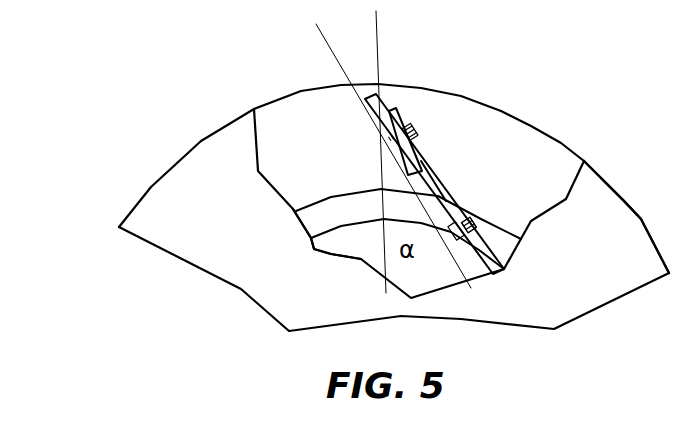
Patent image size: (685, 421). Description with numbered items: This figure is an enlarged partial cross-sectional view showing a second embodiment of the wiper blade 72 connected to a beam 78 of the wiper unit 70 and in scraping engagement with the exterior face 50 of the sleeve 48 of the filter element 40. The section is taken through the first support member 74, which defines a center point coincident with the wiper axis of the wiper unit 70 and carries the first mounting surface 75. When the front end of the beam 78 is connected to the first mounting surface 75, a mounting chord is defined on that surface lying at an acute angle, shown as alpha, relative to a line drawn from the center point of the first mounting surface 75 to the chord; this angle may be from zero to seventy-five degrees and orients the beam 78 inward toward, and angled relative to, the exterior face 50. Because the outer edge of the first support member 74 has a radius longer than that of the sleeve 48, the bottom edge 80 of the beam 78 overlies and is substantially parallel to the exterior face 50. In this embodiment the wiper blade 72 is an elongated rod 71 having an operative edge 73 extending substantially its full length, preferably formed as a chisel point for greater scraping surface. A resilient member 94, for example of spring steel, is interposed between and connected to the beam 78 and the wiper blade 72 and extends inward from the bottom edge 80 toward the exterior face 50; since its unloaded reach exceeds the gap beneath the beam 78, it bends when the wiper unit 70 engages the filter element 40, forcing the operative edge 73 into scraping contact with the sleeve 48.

The filter element 40 is at (312, 235).
The sleeve 48 is at (333, 222).
The exterior face 50 is at (333, 222).
The wiper unit 70 is at (617, 193).
The elongated rod 71 is at (453, 334).
The wiper blade 72 is at (453, 232).
The operative edge 73 is at (459, 233).
The first support member 74 is at (632, 228).
The first mounting surface 75 is at (598, 175).
The beam 78 is at (383, 107).
The bottom edge 80 is at (420, 170).
The resilient member 94 is at (437, 180).